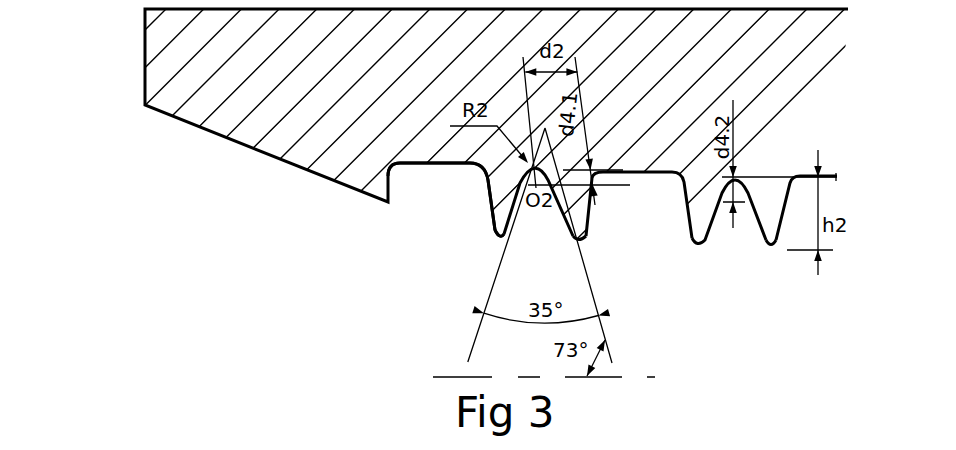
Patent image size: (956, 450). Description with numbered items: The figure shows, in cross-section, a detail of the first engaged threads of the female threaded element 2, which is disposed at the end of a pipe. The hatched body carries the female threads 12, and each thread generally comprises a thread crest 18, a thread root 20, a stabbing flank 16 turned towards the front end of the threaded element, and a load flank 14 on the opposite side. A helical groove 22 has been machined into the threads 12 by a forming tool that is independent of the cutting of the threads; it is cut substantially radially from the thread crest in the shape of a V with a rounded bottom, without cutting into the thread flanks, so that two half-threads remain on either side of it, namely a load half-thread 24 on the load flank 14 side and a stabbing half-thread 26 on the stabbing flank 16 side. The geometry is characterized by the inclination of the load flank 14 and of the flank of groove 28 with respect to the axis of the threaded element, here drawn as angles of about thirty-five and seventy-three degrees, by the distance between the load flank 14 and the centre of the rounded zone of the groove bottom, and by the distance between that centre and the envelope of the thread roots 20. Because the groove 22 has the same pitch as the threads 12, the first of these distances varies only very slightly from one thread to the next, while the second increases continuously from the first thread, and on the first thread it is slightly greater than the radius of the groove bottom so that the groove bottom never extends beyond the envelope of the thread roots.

The female threaded element 2 is at (285, 172).
The female threads 12 is at (787, 250).
The load flank 14 is at (593, 206).
The stabbing flank 16 is at (489, 191).
The thread crest 18 is at (576, 241).
The thread root 20 is at (643, 178).
The helical groove 22 is at (533, 217).
The load half-thread 24 is at (577, 244).
The stabbing half-thread 26 is at (497, 233).
The flank of groove 28 is at (603, 327).